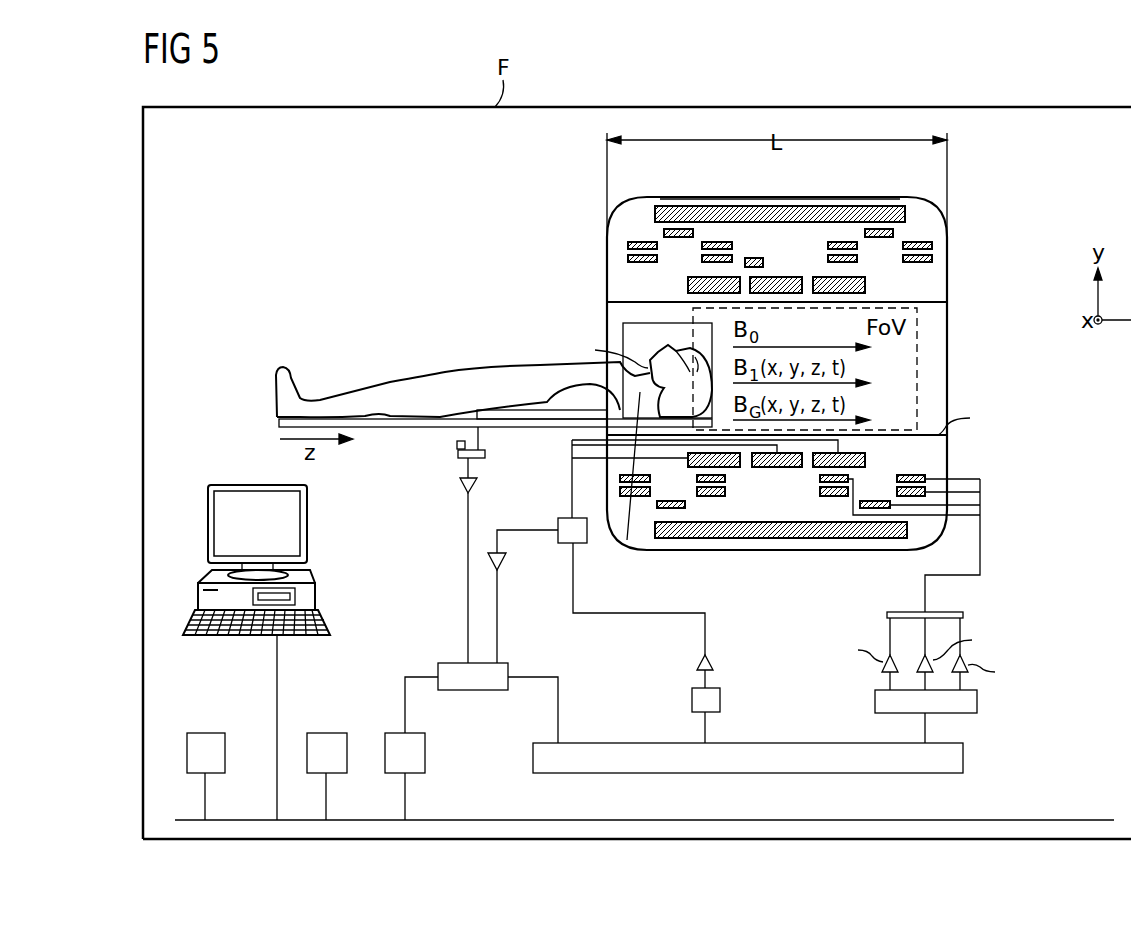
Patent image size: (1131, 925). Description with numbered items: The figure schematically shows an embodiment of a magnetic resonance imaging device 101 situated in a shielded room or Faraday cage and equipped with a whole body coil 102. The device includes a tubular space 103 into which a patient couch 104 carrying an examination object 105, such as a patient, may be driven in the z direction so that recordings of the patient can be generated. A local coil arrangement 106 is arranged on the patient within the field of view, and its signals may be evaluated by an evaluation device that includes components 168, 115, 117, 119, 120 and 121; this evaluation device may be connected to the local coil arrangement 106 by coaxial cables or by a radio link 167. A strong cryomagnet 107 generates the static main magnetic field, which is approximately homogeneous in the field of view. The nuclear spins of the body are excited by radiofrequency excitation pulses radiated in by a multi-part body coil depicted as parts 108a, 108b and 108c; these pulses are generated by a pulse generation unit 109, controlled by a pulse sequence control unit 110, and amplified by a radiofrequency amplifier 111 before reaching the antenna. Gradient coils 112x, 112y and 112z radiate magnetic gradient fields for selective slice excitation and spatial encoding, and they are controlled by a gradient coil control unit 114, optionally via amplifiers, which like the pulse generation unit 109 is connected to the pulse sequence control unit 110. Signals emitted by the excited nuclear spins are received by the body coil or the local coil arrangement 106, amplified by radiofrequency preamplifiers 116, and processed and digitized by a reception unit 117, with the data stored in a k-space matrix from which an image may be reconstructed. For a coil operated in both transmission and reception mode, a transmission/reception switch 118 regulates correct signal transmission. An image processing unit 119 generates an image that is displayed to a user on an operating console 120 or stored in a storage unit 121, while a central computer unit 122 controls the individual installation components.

The magnetic resonance imaging device 101 is at (1040, 228).
The whole body coil 102 is at (847, 187).
The tubular space 103 is at (957, 372).
The patient couch 104 is at (375, 428).
The examination object 105 is at (276, 374).
The local coil arrangement 106 is at (645, 323).
The cryomagnet 107 is at (680, 206).
The body coil part 108a is at (688, 289).
The body coil part 108b is at (780, 277).
The body coil part 108c is at (865, 287).
The pulse generation unit 109 is at (721, 700).
The pulse sequence control unit 110 is at (965, 755).
The radiofrequency amplifier 111 is at (715, 662).
The gradient coil 112x is at (932, 258).
The gradient coil 112y is at (932, 245).
The gradient coil 112z is at (893, 233).
The gradient coil control unit 114 is at (978, 700).
The evaluation device component 115 is at (460, 486).
The radiofrequency preamplifier 116 is at (505, 560).
The reception unit 117 is at (477, 691).
The transmission/reception switch 118 is at (558, 523).
The image processing unit 119 is at (390, 733).
The operating console 120 is at (316, 597).
The storage unit 121 is at (205, 733).
The central computer unit 122 is at (326, 733).
The radio link 167 is at (458, 445).
The evaluation device component 168 is at (486, 454).